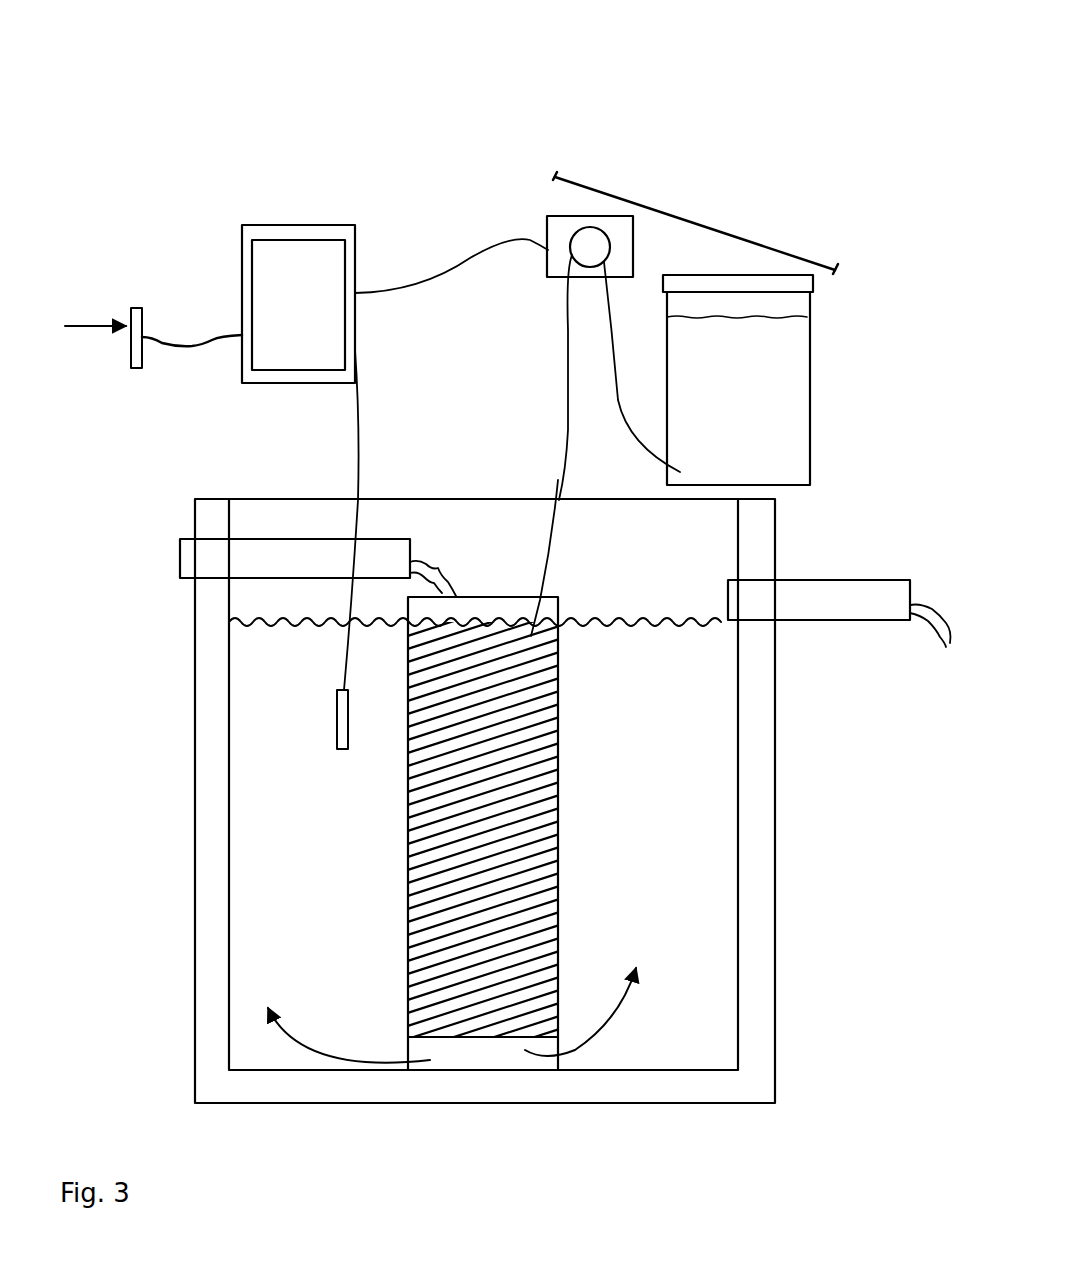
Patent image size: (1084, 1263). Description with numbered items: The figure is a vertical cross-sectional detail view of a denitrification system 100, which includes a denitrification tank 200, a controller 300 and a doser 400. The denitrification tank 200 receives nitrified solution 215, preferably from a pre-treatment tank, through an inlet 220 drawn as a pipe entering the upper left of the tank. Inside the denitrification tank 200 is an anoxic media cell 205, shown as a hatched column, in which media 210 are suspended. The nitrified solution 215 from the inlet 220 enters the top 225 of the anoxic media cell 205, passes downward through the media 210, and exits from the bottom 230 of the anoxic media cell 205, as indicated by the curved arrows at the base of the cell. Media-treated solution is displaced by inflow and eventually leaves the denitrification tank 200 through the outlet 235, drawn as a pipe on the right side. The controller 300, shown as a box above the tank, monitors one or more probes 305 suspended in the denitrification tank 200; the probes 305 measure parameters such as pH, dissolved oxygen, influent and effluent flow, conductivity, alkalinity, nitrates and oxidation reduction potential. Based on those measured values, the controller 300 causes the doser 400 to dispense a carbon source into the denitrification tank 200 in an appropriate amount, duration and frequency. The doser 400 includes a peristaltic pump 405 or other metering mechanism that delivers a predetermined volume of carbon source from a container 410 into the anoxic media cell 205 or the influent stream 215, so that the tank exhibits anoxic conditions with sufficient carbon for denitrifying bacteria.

The denitrification system 100 is at (580, 66).
The denitrification tank 200 is at (160, 949).
The anoxic media cell 205 is at (384, 840).
The media 210 is at (452, 880).
The nitrified solution 215 is at (442, 556).
The inlet 220 is at (186, 556).
The top of anoxic media cell 225 is at (490, 578).
The bottom of anoxic media cell 230 is at (600, 1057).
The outlet 235 is at (840, 611).
The controller 300 is at (192, 242).
The probes 305 is at (335, 730).
The doser 400 is at (701, 232).
The peristaltic pump 405 is at (547, 272).
The container 410 is at (752, 403).